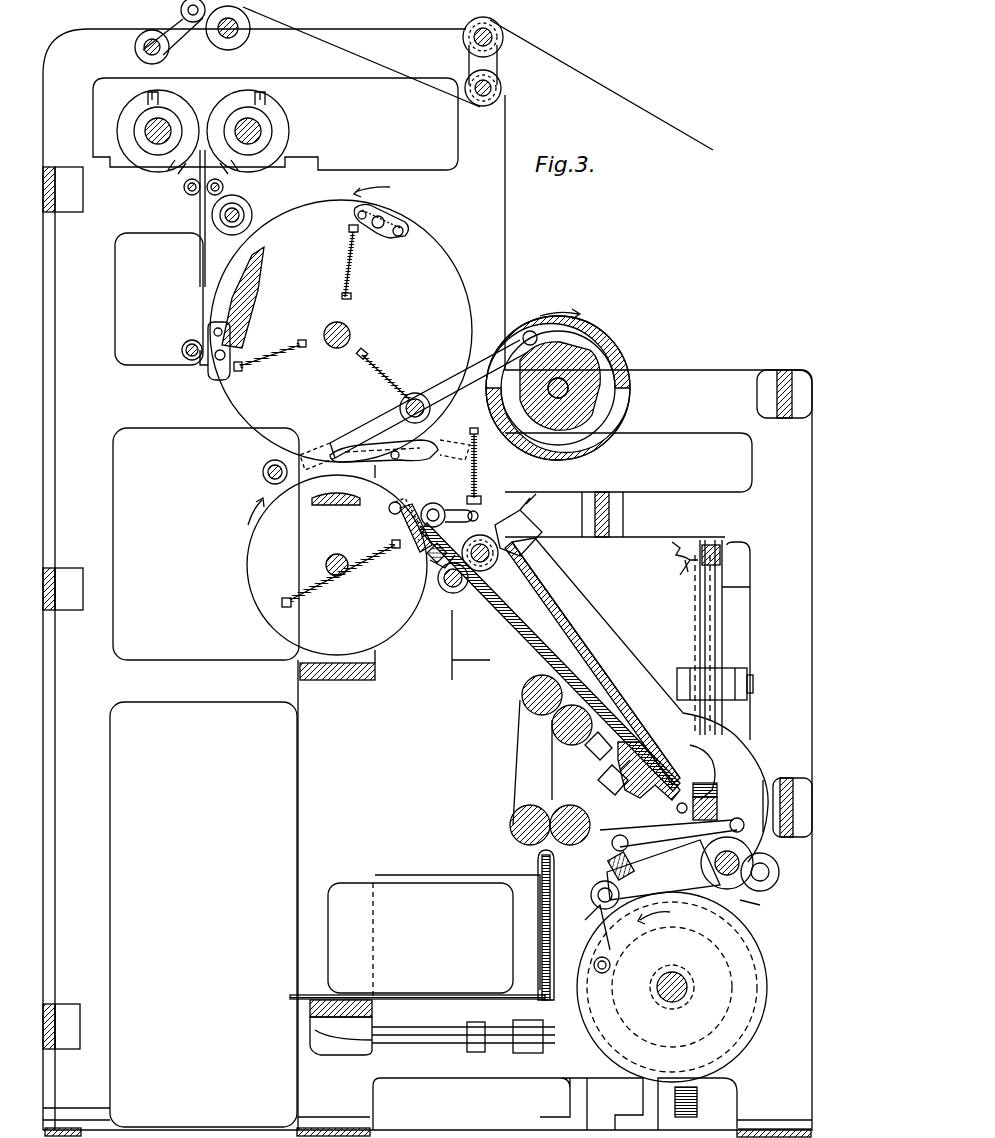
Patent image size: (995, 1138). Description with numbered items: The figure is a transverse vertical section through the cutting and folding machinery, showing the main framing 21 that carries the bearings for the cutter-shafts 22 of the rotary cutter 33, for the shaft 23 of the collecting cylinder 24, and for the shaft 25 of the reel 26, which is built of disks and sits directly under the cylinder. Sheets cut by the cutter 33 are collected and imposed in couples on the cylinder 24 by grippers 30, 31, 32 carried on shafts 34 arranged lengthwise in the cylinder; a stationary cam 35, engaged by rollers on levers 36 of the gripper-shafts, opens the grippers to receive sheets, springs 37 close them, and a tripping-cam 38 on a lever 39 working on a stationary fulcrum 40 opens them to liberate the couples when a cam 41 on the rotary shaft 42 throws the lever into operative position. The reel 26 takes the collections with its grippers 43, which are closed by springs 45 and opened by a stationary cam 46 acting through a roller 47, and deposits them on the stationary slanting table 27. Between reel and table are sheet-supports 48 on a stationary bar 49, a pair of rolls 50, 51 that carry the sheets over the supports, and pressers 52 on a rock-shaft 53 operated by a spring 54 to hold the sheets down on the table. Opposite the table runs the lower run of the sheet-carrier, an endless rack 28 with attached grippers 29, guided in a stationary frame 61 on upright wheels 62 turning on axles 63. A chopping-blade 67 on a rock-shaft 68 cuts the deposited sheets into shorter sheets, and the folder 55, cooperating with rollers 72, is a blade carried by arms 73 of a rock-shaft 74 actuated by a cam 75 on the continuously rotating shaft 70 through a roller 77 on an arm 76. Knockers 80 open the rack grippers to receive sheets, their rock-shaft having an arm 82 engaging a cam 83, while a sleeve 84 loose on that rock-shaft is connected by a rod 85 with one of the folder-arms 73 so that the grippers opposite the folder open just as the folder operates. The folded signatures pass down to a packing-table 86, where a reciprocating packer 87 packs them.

The main framing 21 is at (427, 583).
The cutter-shafts 22 is at (145, 128).
The shaft of the collecting cylinder 23 is at (330, 330).
The collecting cylinder 24 is at (341, 324).
The shaft of the rotary sheet-carrier 25 is at (335, 558).
The rotary sheet-carrier (reel) 26 is at (337, 565).
The stationary slanting table 27 is at (500, 605).
The endless rack 28 is at (722, 547).
The grippers of the sheet-carrier 29 is at (680, 556).
The cylinder gripper 30 is at (200, 345).
The cylinder gripper 31 is at (402, 215).
The cylinder gripper 32 is at (444, 452).
The rotary cutter 33 is at (150, 96).
The gripper-shafts 34 is at (378, 228).
The stationary cam 35 is at (244, 252).
The levers 36 is at (398, 236).
The springs 37 is at (350, 250).
The tripping-cam 38 is at (369, 443).
The lever 39 is at (446, 385).
The stationary fulcrum 40 is at (400, 410).
The cam 41 is at (575, 335).
The rotary shaft 42 is at (585, 385).
The reel grippers 43 is at (428, 506).
The springs 45 is at (341, 575).
The stationary cam 46 is at (315, 505).
The roller 47 is at (396, 512).
The sheet-supports 48 is at (440, 520).
The stationary bar 49 is at (440, 563).
The roll 50 is at (492, 553).
The roll 51 is at (452, 594).
The knockers or pressers 52 is at (475, 572).
The rock-shaft 53 is at (476, 510).
The spring 54 is at (487, 466).
The folder 55 is at (590, 655).
The stationary frame 61 is at (724, 640).
The upright wheels 62 is at (705, 652).
The axles 63 is at (752, 682).
The chopping-blade 67 is at (592, 663).
The rock-shaft 68 is at (765, 888).
The shaft 70 is at (678, 982).
The rollers 72 is at (538, 688).
The folder-arms 73 is at (667, 777).
The rock-shaft 74 is at (721, 863).
The cam 75 is at (755, 912).
The arm 76 is at (663, 870).
The roller 77 is at (565, 925).
The knockers 80 is at (597, 866).
The arm 82 is at (597, 958).
The cam 83 is at (674, 1050).
The sleeve 84 is at (597, 780).
The rod 85 is at (500, 925).
The packing-table 86 is at (417, 1014).
The reciprocating packer 87 is at (550, 1043).